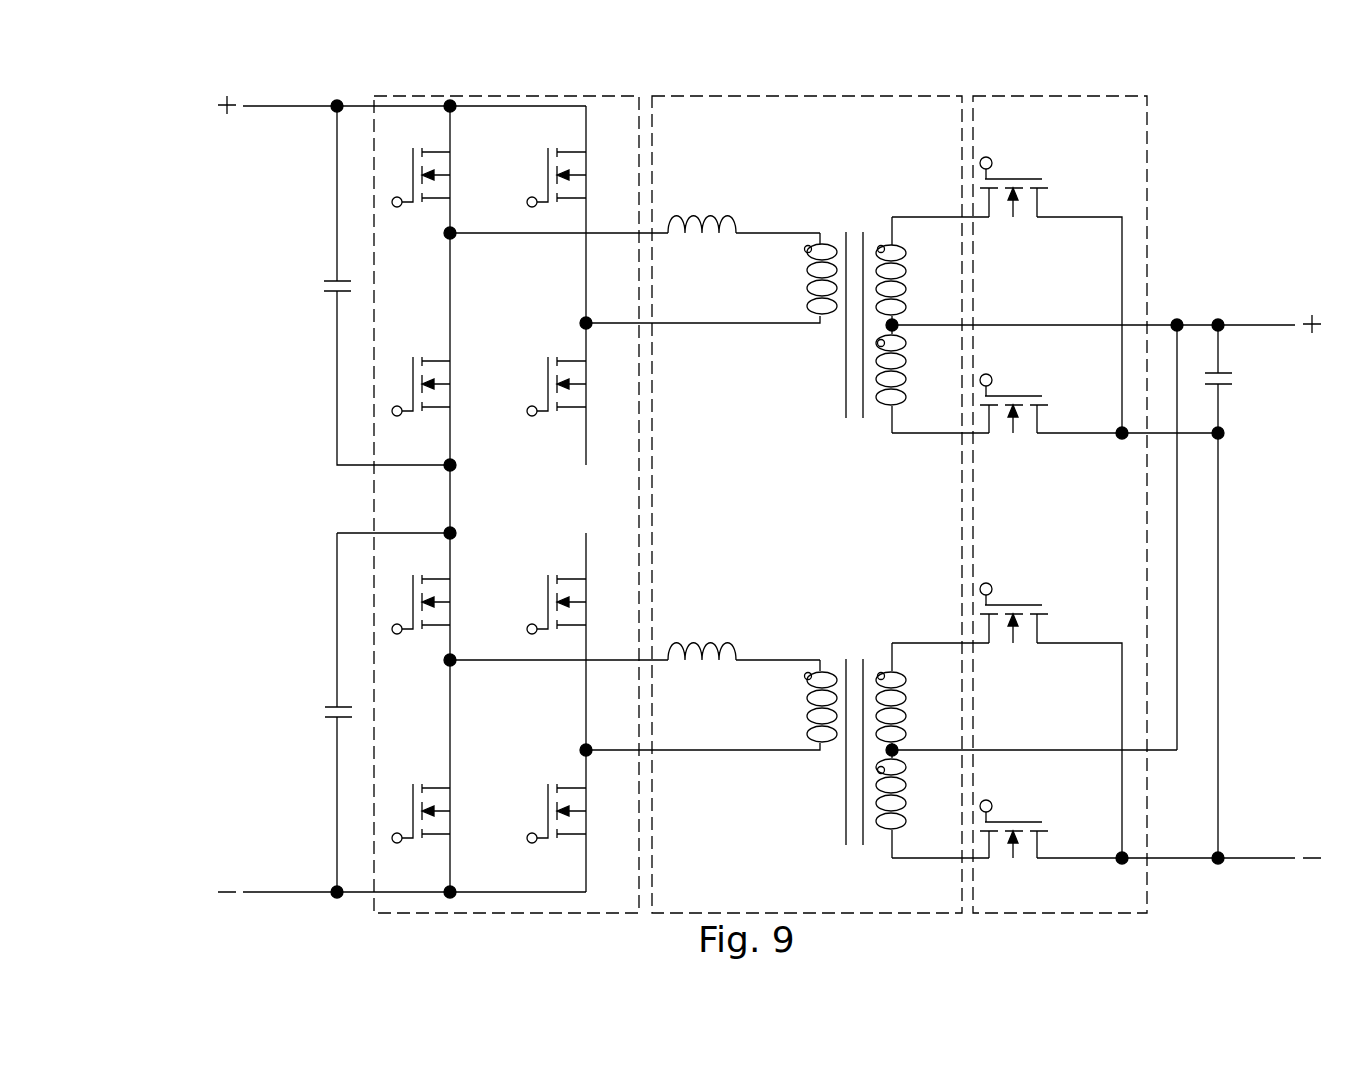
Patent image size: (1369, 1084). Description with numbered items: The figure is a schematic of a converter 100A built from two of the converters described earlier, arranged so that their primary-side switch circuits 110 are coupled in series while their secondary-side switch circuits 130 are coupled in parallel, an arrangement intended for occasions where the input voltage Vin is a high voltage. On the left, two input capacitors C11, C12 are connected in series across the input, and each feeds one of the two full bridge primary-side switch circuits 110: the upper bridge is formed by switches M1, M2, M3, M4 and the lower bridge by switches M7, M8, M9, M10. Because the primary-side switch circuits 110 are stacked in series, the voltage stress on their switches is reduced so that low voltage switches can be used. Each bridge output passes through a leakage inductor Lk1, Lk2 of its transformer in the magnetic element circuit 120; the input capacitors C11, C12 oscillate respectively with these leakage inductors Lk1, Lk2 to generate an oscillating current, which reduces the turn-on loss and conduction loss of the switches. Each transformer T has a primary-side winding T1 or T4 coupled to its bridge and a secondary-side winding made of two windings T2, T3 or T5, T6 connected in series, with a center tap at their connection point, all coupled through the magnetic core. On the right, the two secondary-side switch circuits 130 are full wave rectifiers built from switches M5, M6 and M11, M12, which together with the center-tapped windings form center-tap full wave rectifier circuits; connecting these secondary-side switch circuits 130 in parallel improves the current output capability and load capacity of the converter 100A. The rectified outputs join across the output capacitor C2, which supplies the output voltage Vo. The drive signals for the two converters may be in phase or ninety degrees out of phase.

The converter 100A is at (180, 96).
The primary-side switch circuit 110 is at (508, 96).
The magnetic element circuit 120 is at (821, 96).
The secondary-side switch circuit 130 is at (1066, 96).
The input capacitor C11 is at (358, 285).
The input capacitor C12 is at (358, 712).
The output capacitor C2 is at (1237, 379).
The switch M1 is at (442, 177).
The switch M2 is at (577, 177).
The switch M3 is at (577, 386).
The switch M4 is at (442, 386).
The switch M5 is at (1014, 202).
The switch M6 is at (1014, 419).
The seventh switch M7 is at (442, 604).
The eighth switch M8 is at (577, 604).
The ninth switch M9 is at (577, 813).
The tenth switch M10 is at (449, 813).
The eleventh switch M11 is at (1014, 629).
The twelfth switch M12 is at (1014, 846).
The leakage inductor Lk1 is at (635, 208).
The leakage inductor Lk2 is at (635, 635).
The transformer T is at (760, 530).
The primary-side winding T1 is at (711, 278).
The winding T2 is at (905, 275).
The winding T3 is at (905, 384).
The second primary winding T4 is at (711, 705).
The third secondary winding T5 is at (905, 700).
The fourth secondary winding T6 is at (905, 808).
The input voltage Vin is at (396, 497).
The output voltage Vo is at (1311, 586).